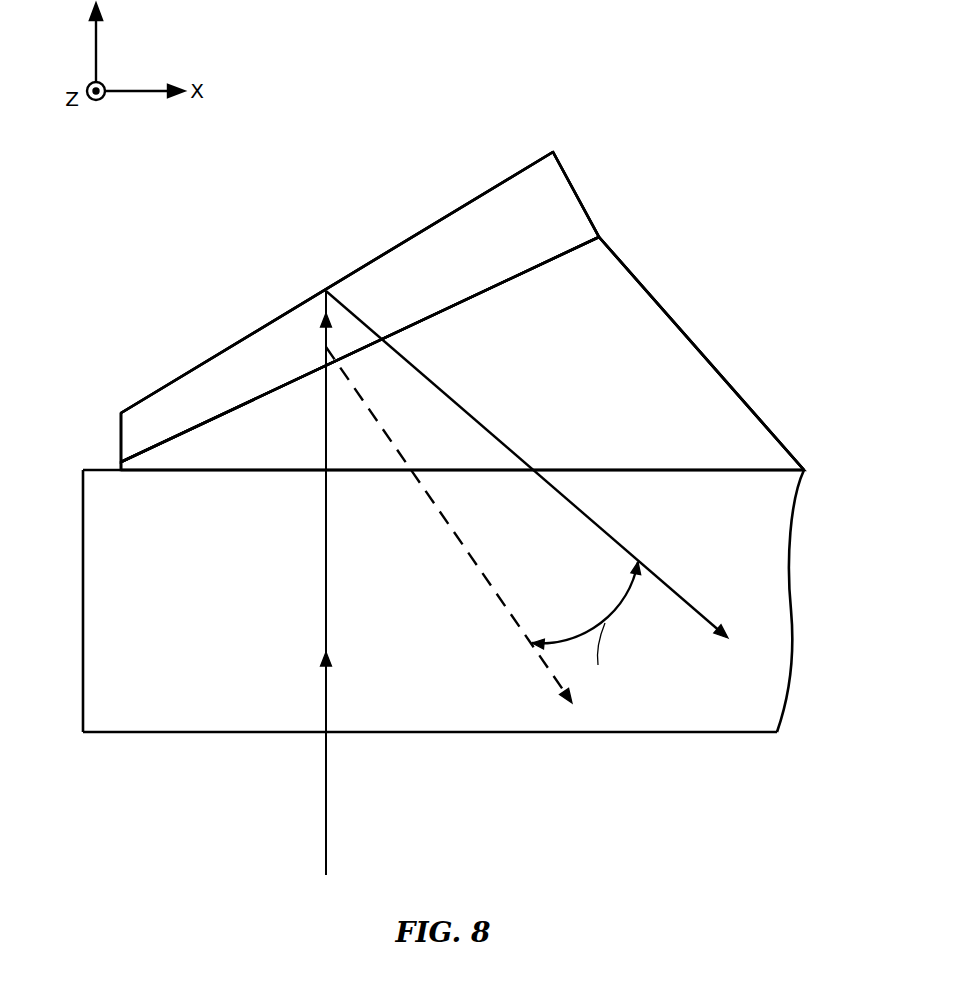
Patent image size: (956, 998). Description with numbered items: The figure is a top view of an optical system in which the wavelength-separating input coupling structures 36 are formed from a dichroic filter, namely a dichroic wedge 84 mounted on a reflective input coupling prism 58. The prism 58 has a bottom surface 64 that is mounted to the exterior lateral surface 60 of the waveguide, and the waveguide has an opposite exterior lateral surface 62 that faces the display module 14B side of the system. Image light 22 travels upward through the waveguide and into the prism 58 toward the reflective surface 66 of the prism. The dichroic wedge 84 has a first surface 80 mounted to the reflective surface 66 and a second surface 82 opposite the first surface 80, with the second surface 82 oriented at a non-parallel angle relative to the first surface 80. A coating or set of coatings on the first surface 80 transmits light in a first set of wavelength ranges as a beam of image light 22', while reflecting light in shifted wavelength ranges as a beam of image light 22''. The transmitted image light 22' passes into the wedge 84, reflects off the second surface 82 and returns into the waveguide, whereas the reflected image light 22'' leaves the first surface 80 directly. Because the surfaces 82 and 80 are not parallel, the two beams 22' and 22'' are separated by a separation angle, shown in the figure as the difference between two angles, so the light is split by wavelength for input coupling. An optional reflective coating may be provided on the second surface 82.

The display module 14B is at (747, 97).
The wavelength-separating input coupling structures 36 is at (594, 183).
The prism 58 is at (683, 337).
The exterior surface of waveguide 60 is at (698, 474).
The exterior surface of waveguide 62 is at (695, 727).
The bottom surface of prism 64 is at (653, 468).
The reflective surface of prism 66 is at (558, 263).
The first surface of dichroic wedge 80 is at (185, 427).
The second surface of dichroic wedge 82 is at (157, 387).
The dichroic wedge 84 is at (490, 197).
The image light 22 is at (293, 583).
The beam of image light 22' is at (493, 464).
The beam of image light 22'' is at (449, 525).